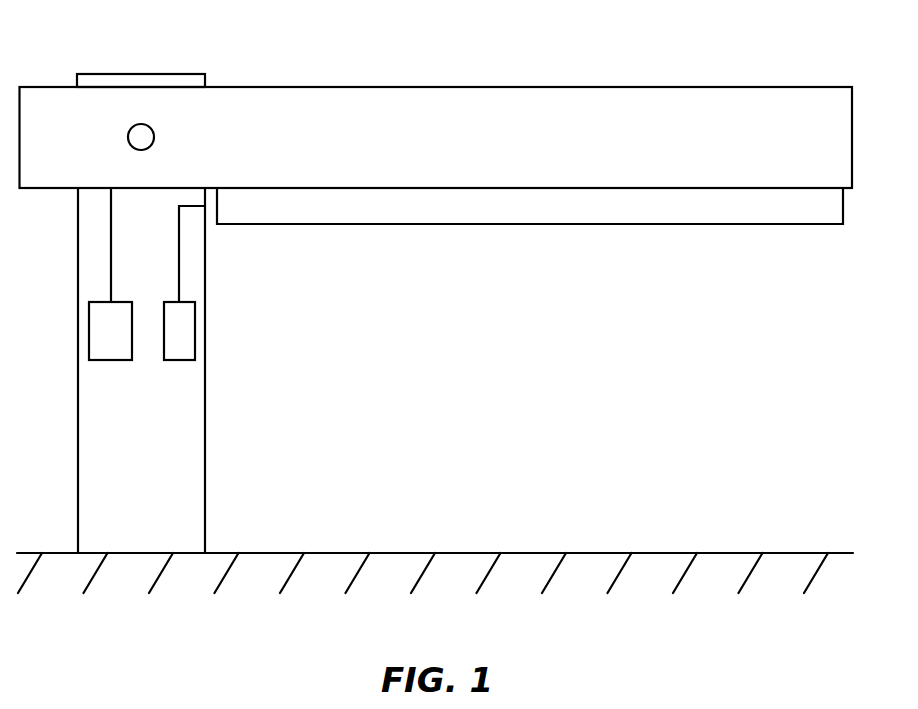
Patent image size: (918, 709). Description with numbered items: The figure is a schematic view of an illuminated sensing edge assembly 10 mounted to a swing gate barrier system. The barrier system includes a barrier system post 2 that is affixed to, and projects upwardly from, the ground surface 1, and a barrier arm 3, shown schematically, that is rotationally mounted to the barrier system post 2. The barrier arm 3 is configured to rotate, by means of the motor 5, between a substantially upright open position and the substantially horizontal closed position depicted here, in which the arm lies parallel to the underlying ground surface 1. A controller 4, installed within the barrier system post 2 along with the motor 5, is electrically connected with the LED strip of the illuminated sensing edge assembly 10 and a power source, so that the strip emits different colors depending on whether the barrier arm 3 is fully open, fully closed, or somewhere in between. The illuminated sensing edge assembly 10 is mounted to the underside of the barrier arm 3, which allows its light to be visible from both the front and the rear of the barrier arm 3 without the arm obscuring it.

The ground surface 1 is at (732, 552).
The barrier system post 2 is at (190, 405).
The barrier arm 3 is at (657, 98).
The controller 4 is at (184, 331).
The motor 5 is at (100, 331).
The illuminated sensing edge assembly 10 is at (694, 226).